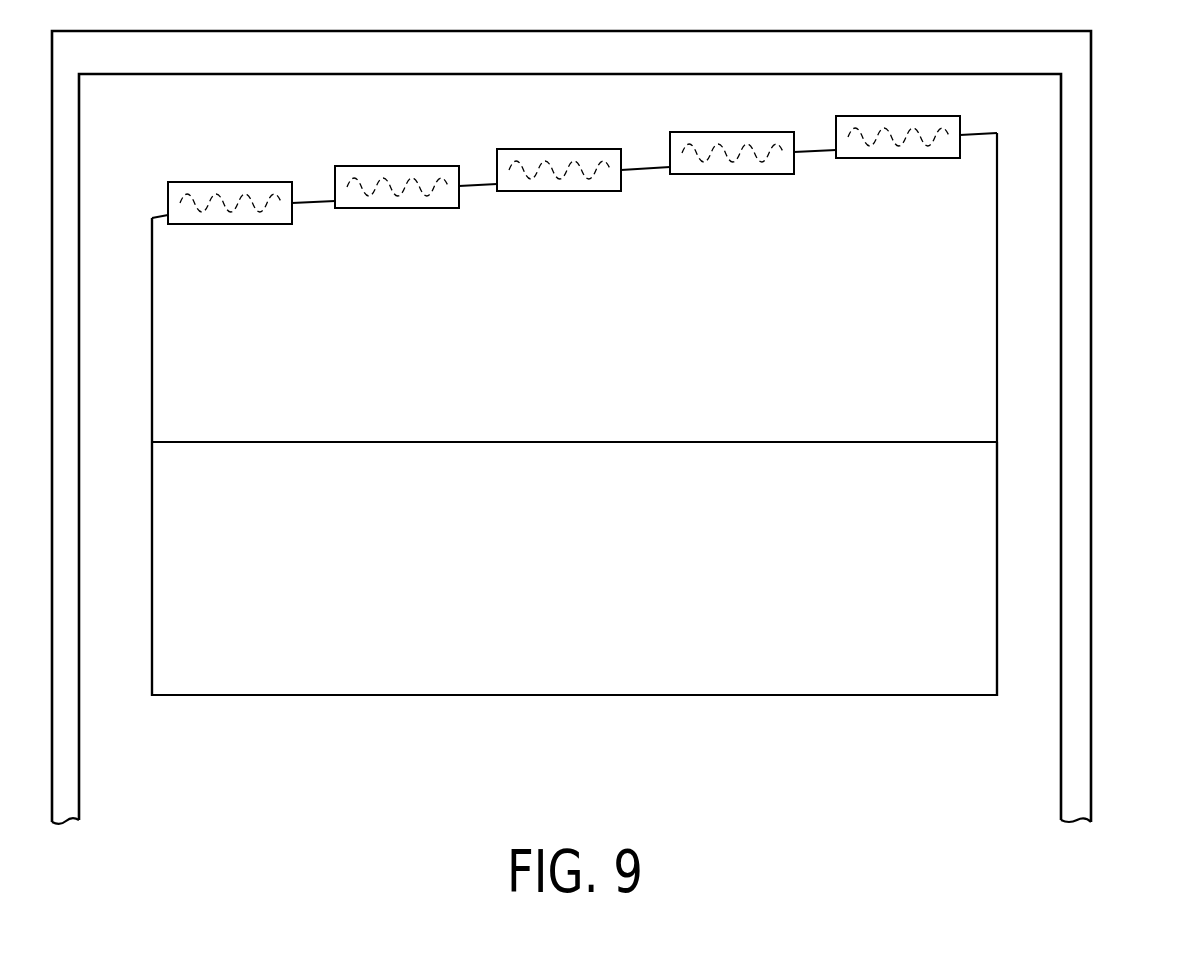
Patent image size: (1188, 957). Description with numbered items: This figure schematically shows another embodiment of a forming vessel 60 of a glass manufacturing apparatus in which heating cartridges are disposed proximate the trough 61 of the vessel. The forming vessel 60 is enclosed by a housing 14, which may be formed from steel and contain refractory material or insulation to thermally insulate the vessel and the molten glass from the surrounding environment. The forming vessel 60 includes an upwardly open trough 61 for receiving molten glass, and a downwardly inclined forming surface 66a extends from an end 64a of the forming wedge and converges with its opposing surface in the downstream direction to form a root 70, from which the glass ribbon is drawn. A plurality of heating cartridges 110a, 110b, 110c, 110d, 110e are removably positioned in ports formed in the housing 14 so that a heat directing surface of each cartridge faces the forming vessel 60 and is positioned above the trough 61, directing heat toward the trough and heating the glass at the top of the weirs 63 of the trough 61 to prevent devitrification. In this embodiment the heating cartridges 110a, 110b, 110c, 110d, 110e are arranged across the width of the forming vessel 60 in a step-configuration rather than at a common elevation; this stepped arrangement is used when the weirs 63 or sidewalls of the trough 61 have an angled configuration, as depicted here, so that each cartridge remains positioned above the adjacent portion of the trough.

The housing 14 is at (1091, 112).
The forming vessel 60 is at (208, 184).
The trough 61 is at (394, 179).
The weirs 63 is at (654, 166).
The end of the forming wedge 64a is at (953, 343).
The downwardly inclined forming surface 66a is at (953, 550).
The root 70 is at (676, 695).
The heating cartridge 110a is at (233, 225).
The heating cartridge 110b is at (399, 208).
The heating cartridge 110c is at (558, 191).
The heating cartridge 110d is at (733, 174).
The heating cartridge 110e is at (893, 158).